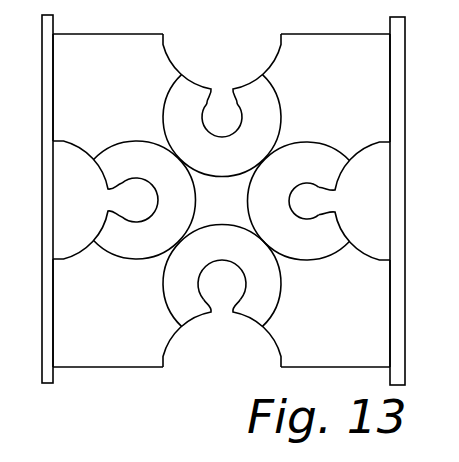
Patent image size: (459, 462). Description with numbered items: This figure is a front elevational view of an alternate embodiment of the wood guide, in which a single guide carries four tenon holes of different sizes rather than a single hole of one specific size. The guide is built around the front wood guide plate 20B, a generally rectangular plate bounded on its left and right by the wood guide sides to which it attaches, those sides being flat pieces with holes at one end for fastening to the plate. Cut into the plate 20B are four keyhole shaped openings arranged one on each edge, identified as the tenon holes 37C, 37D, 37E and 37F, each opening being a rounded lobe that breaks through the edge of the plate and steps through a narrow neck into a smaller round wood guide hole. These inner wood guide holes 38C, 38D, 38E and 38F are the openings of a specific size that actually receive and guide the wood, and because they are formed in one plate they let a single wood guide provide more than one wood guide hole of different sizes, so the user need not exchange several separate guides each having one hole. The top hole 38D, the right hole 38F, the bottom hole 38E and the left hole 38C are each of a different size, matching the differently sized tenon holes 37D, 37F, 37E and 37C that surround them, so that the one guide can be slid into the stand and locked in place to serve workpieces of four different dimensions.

The wood guide plate 20B is at (136, 368).
The tenon hole 37C is at (104, 212).
The tenon hole 37D is at (222, 62).
The tenon hole 37E is at (233, 340).
The tenon hole 37F is at (388, 215).
The wood guide hole 38C is at (140, 197).
The wood guide hole 38D is at (217, 118).
The wood guide hole 38E is at (214, 280).
The wood guide hole 38F is at (304, 200).